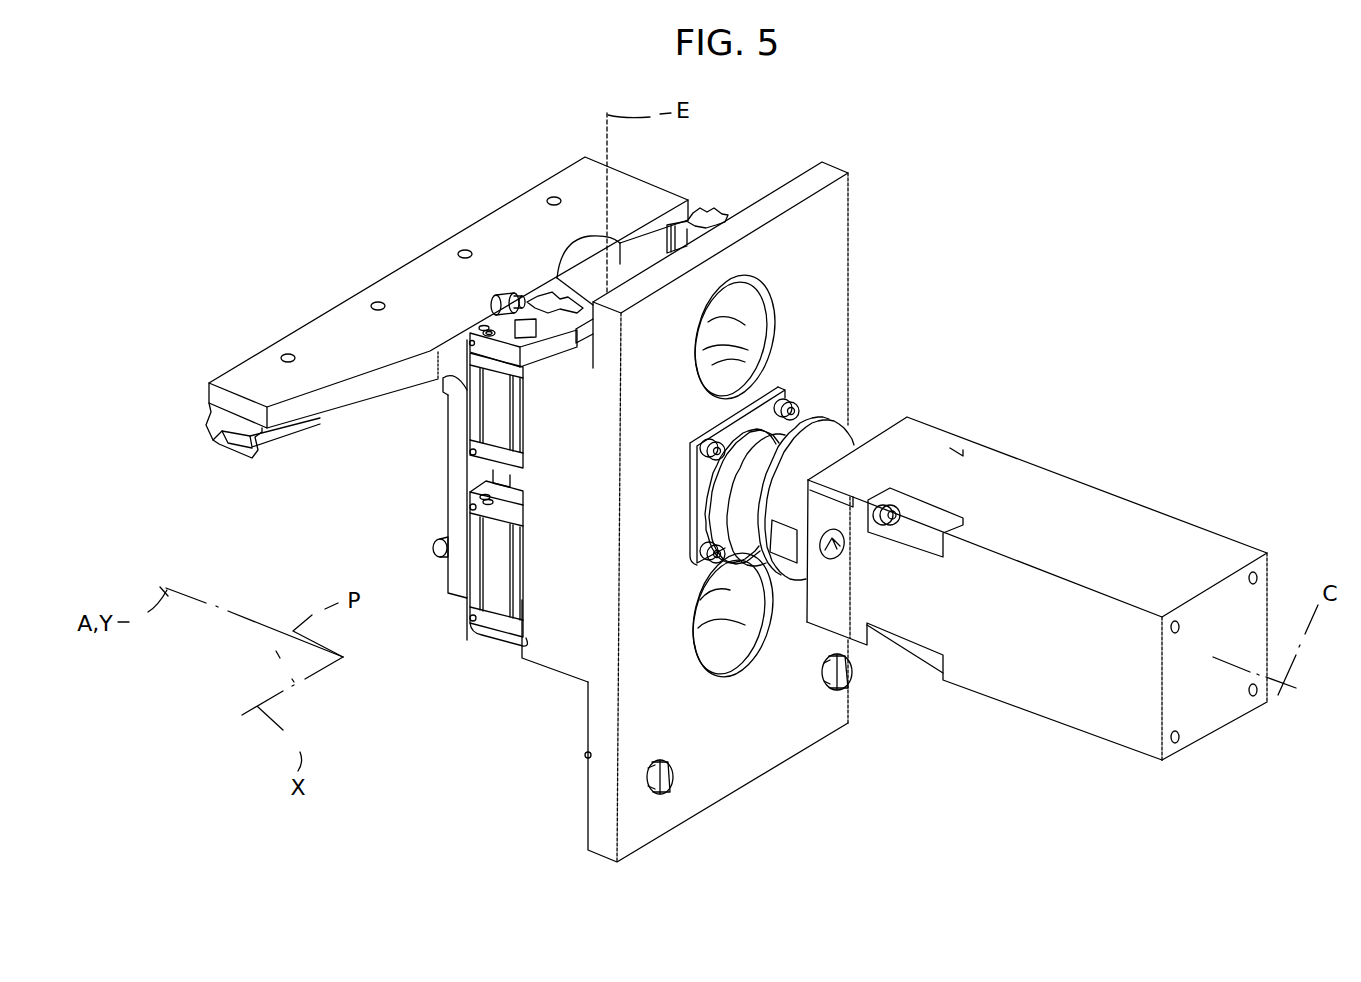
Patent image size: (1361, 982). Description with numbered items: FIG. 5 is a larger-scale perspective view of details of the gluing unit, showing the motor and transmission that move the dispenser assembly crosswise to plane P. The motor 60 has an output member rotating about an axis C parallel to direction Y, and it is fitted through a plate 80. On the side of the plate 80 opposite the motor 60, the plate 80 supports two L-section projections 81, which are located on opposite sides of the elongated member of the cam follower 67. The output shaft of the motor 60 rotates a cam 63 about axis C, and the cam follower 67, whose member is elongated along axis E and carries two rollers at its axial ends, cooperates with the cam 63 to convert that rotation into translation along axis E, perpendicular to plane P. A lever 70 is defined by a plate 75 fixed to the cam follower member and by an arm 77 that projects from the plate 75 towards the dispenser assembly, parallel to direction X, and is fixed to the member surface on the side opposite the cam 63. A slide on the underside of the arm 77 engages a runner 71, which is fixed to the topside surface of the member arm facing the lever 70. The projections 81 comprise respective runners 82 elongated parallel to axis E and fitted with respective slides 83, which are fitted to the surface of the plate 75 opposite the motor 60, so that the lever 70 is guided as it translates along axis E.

The motor 60 is at (1138, 550).
The cam 63 is at (700, 352).
The cam follower 67 is at (531, 152).
The lever 70 is at (426, 283).
The runner 71 is at (240, 440).
The plate 75 is at (457, 466).
The arm 77 is at (335, 345).
The plate 80 is at (740, 765).
The L-section projections 81 is at (570, 653).
The runners 82 is at (550, 328).
The slides 83 is at (502, 603).